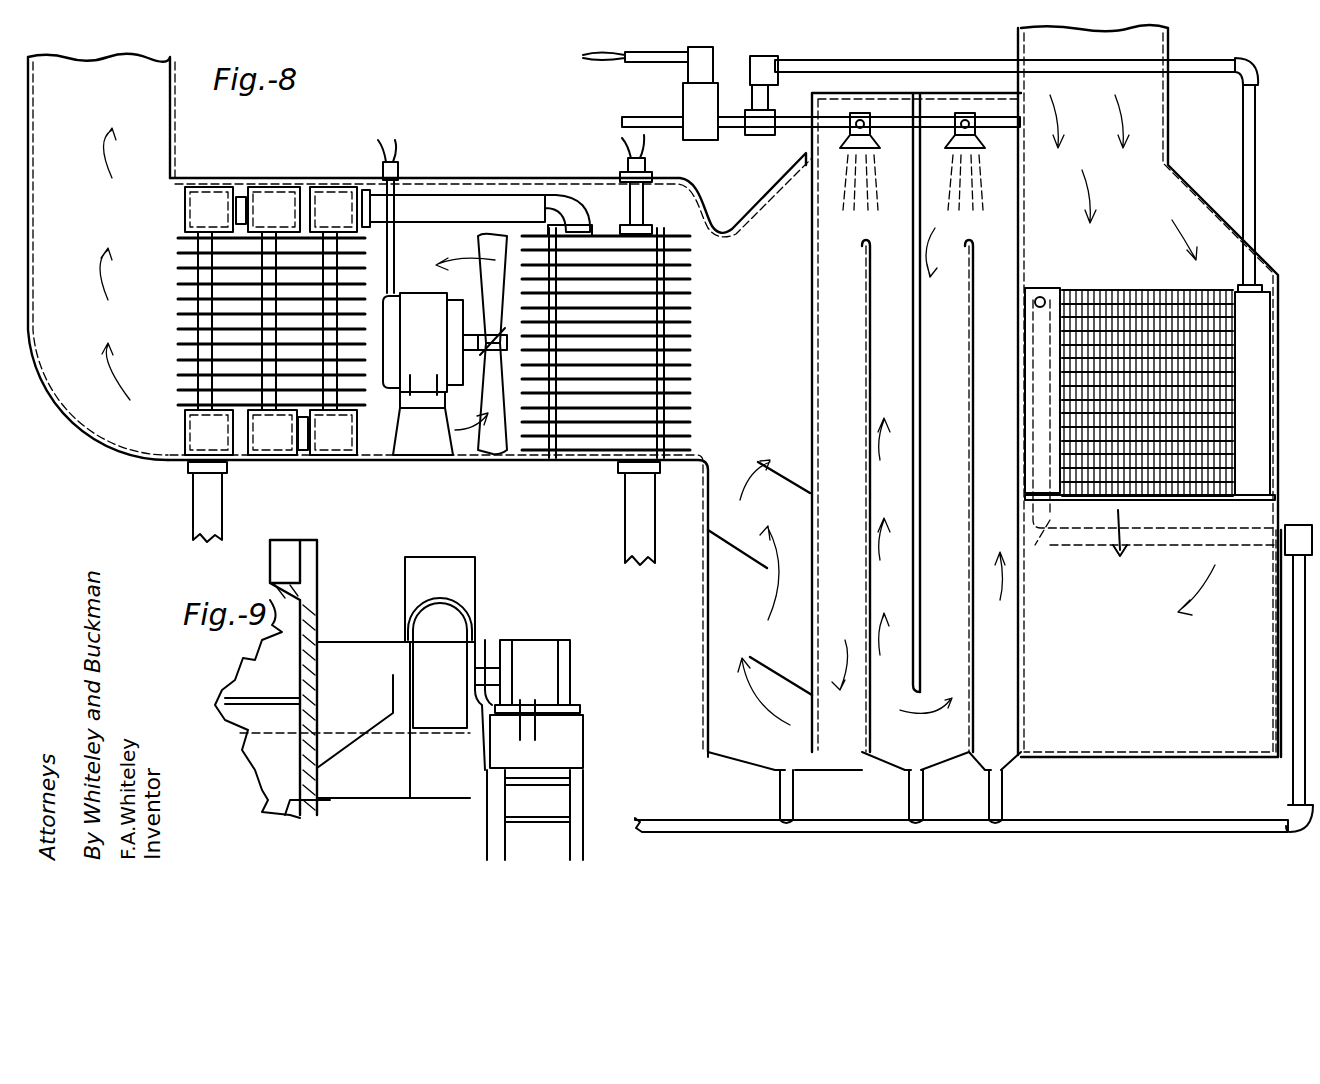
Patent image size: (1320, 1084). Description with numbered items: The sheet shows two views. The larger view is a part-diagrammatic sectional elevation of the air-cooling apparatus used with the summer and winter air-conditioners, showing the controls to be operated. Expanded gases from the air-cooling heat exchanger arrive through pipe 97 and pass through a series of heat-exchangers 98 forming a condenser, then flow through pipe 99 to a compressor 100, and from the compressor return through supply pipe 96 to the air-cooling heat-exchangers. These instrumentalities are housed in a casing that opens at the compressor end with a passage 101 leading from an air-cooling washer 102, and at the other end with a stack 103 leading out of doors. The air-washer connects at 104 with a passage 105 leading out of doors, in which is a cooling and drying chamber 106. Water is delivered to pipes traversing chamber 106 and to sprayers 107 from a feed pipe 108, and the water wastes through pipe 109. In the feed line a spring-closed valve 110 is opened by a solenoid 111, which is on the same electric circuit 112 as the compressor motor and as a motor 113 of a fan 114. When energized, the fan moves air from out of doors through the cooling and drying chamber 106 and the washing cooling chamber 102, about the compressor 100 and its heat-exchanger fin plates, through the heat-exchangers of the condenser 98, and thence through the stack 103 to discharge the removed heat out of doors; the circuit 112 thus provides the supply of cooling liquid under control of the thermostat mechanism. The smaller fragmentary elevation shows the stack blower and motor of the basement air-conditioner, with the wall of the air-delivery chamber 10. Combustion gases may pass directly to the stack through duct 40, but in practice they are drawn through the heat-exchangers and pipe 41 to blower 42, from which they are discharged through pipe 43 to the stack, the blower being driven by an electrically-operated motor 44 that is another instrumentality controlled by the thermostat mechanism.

In FIG. 8, the stack 103 is at (175, 128).
In FIG. 8, the passage 101 is at (437, 178).
In FIG. 8, the heat-exchangers forming a condenser 98 is at (185, 245).
In FIG. 8, the pipe 97 is at (215, 495).
In FIG. 8, the pipe 99 is at (470, 200).
In FIG. 8, the electric circuit 112 is at (384, 152).
In FIG. 8, the motor 113 is at (437, 296).
In FIG. 8, the fan 114 is at (490, 248).
In FIG. 8, the compressor 100 is at (600, 233).
In FIG. 8, the supply pipe 96 is at (625, 512).
In FIG. 8, the solenoid 111 is at (702, 47).
In FIG. 8, the spring-closed valve 110 is at (708, 122).
In FIG. 8, the feed pipe 108 is at (648, 105).
In FIG. 8, the sprayers 107 is at (968, 110).
In FIG. 8, the air-cooling washer 102 is at (860, 240).
In FIG. 8, the duct 105 is at (1145, 146).
In FIG. 8, the cooling and drying chamber 106 is at (1178, 490).
In FIG. 8, the connection of air-washer with outdoor passage 104 is at (1024, 650).
In FIG. 8, the waste pipe 109 is at (722, 806).
In FIG. 9, the air-delivery chamber 10 is at (318, 552).
In FIG. 9, the duct 40 is at (350, 788).
In FIG. 9, the pipe 41 is at (350, 655).
In FIG. 9, the blower 42 is at (445, 628).
In FIG. 9, the pipe 43 is at (460, 570).
In FIG. 9, the motor 44 is at (545, 650).